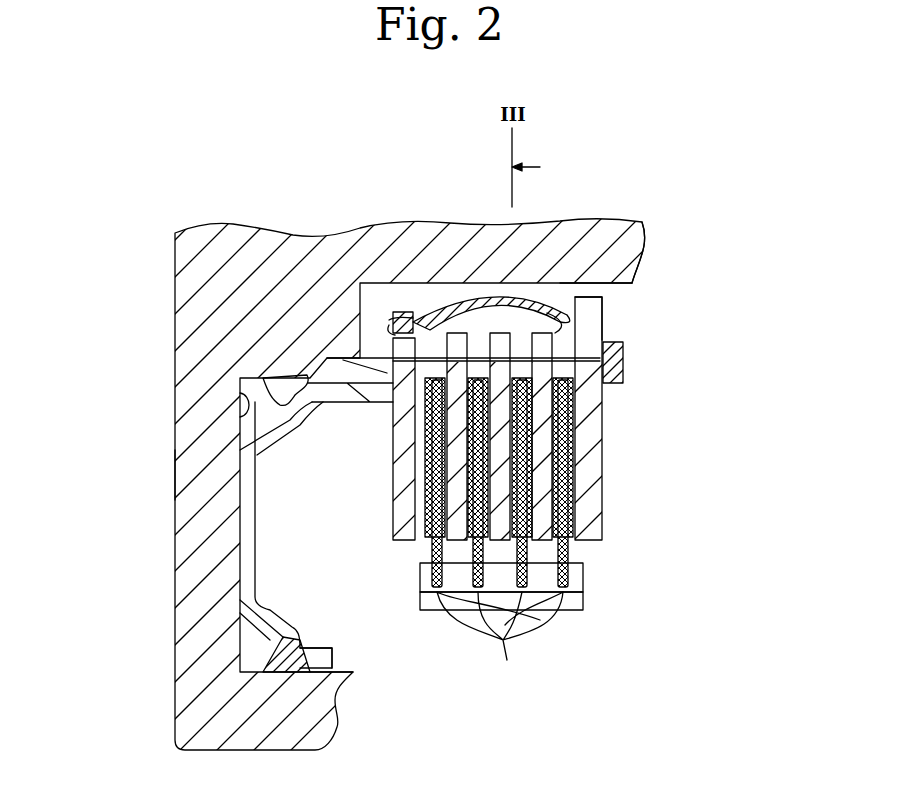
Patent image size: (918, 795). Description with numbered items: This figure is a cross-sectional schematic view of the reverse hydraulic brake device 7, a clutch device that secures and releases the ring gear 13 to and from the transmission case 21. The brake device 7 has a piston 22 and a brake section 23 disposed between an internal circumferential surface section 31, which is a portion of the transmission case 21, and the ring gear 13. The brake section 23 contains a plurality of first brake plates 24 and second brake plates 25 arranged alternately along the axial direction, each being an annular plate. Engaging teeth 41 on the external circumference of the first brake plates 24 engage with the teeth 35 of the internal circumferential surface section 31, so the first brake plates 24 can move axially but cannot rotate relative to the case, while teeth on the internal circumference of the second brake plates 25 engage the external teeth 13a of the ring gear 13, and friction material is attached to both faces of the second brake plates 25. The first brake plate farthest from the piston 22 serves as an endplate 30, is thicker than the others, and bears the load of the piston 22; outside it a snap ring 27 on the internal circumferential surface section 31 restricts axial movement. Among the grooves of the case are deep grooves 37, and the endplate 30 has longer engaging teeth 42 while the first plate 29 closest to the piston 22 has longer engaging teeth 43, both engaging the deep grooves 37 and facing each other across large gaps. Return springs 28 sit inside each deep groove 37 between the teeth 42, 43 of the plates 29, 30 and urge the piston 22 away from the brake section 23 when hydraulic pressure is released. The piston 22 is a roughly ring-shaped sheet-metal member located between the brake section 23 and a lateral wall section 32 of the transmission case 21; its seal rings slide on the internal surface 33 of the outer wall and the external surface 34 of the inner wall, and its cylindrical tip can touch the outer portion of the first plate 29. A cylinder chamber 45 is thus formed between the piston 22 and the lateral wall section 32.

The reverse hydraulic brake device 7 is at (655, 264).
The ring gear 13 is at (572, 600).
The external teeth of the ring gear 13a is at (577, 572).
The transmission case 21 is at (208, 263).
The piston 22 is at (240, 565).
The brake section 23 is at (362, 467).
The first brake plates 24 is at (517, 419).
The second brake plates 25 is at (500, 536).
The snap ring 27 is at (623, 380).
The return springs 28 is at (450, 327).
The first plate closest to the piston 29 is at (357, 368).
The endplate 30 is at (587, 445).
The internal circumferential surface section 31 is at (637, 270).
The lateral wall section 32 is at (173, 473).
The internal surface of the external circumferential wall 33 is at (305, 373).
The external surface of the internal circumferential wall 34 is at (333, 653).
The teeth of the internal circumferential surface section 35 is at (447, 318).
The deep grooves 37 is at (396, 305).
The engaging teeth 41 is at (632, 267).
The engaging teeth of the endplate 42 is at (592, 325).
The engaging teeth of the first plate closest to the piston 43 is at (393, 313).
The cylinder chamber 45 is at (262, 655).